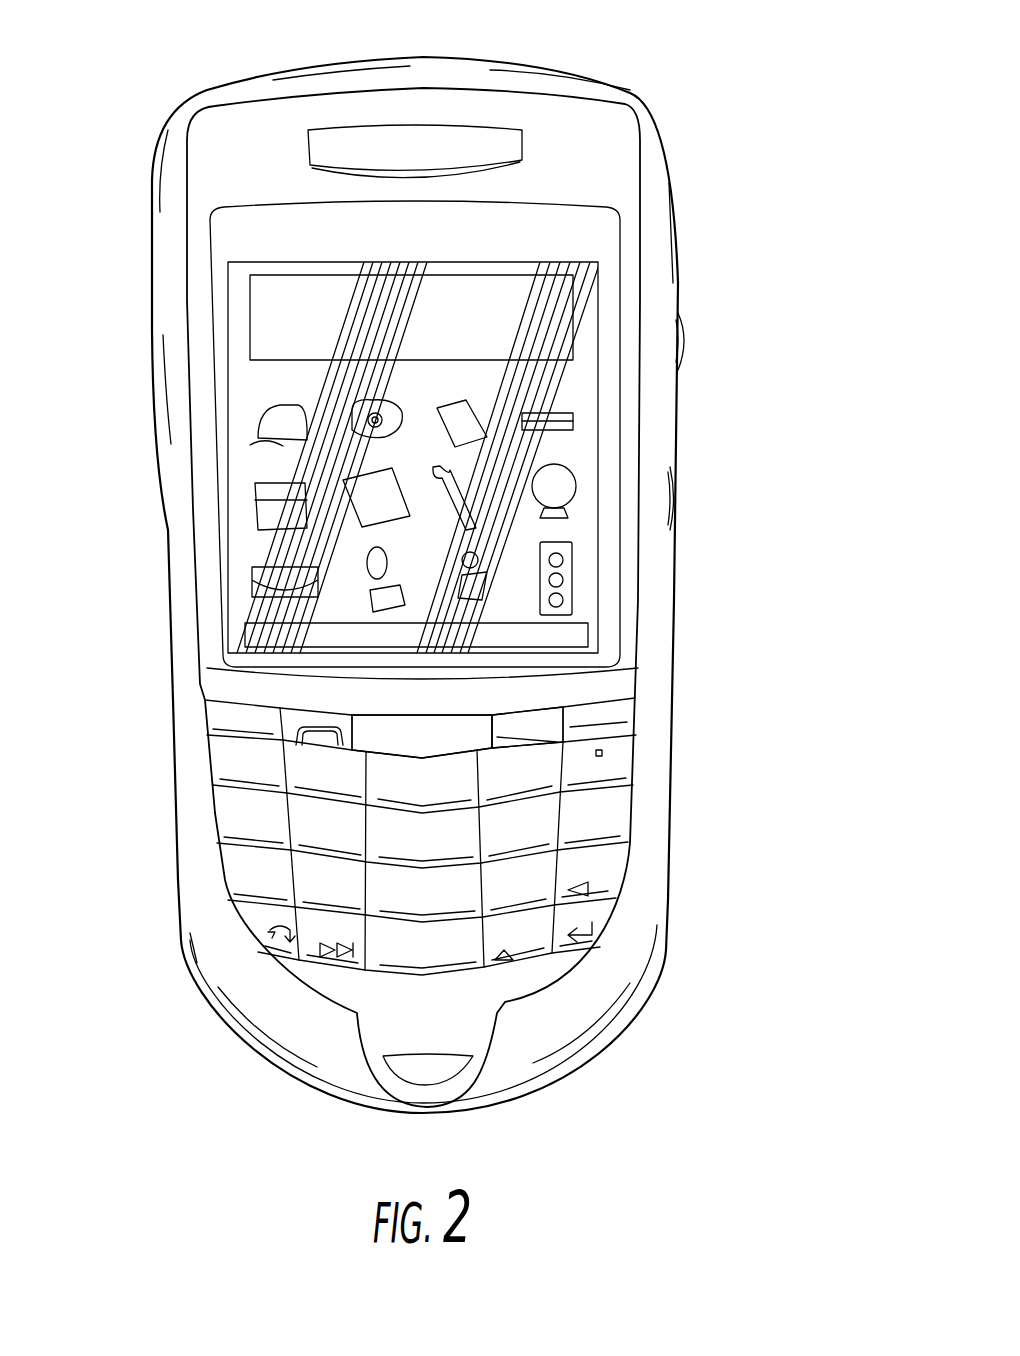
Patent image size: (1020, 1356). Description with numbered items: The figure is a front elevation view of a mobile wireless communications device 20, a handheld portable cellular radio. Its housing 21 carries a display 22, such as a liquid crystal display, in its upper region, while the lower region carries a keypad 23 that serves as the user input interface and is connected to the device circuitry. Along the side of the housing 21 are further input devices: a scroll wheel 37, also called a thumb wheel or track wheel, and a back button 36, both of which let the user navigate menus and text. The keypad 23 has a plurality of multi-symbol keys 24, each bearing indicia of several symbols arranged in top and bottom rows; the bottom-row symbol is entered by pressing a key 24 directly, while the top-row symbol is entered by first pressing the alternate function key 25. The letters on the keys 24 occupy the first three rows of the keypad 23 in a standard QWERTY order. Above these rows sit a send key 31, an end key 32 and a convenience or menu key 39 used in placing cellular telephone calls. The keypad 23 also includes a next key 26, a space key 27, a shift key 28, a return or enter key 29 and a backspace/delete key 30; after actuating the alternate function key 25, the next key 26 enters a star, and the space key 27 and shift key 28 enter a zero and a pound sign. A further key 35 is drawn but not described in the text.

The mobile wireless communications device 20 is at (727, 62).
The housing 21 is at (205, 102).
The display 22 is at (242, 370).
The keypad 23 is at (642, 752).
The multi-symbol keys 24 is at (230, 813).
The alternate function key 25 is at (257, 933).
The next key 26 is at (313, 953).
The space key 27 is at (380, 960).
The shift key 28 is at (527, 953).
The return key 29 is at (595, 922).
The backspace/delete key 30 is at (613, 872).
The send key 31 is at (300, 723).
The end key 32 is at (535, 715).
The key 35 is at (620, 815).
The back button 36 is at (672, 498).
The scroll wheel 37 is at (685, 340).
The convenience key 39 is at (452, 722).